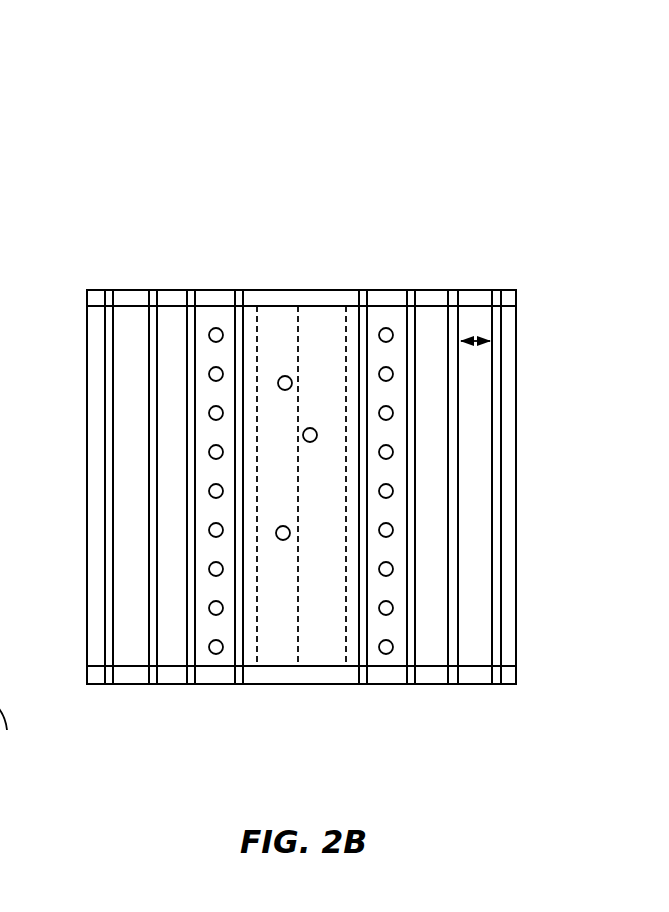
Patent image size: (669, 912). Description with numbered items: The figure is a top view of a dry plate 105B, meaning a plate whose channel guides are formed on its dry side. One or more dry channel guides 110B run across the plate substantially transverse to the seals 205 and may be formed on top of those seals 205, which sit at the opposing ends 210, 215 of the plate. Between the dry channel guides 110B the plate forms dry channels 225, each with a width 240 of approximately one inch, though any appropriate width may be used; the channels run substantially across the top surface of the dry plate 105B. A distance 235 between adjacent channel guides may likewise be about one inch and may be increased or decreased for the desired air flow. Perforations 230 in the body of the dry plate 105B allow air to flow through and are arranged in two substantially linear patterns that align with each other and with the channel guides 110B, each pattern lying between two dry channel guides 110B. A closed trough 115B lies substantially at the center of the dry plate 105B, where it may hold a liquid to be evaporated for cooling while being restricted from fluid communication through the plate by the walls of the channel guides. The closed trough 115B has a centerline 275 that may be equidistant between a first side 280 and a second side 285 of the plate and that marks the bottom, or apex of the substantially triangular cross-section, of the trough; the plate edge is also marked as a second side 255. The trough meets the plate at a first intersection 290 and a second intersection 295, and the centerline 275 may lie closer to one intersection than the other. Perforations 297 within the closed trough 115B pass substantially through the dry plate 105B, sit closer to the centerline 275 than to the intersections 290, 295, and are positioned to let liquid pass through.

The dry plate 105B is at (302, 137).
The dry channel guide 110B is at (455, 500).
The closed trough 115B is at (308, 323).
The seal 205 is at (127, 288).
The first end 210 is at (493, 732).
The second end 215 is at (433, 257).
The dry channel 225 is at (472, 607).
The perforations 230 is at (210, 648).
The distance between channel guides 235 is at (3, 452).
The width of the dry channels 240 is at (478, 321).
The second side 255 is at (0, 522).
The centerline 275 is at (293, 636).
The first side 280 is at (78, 602).
The second side 285 is at (528, 400).
The first intersection 290 is at (267, 323).
The second intersection 295 is at (347, 323).
The perforations 297 is at (290, 538).